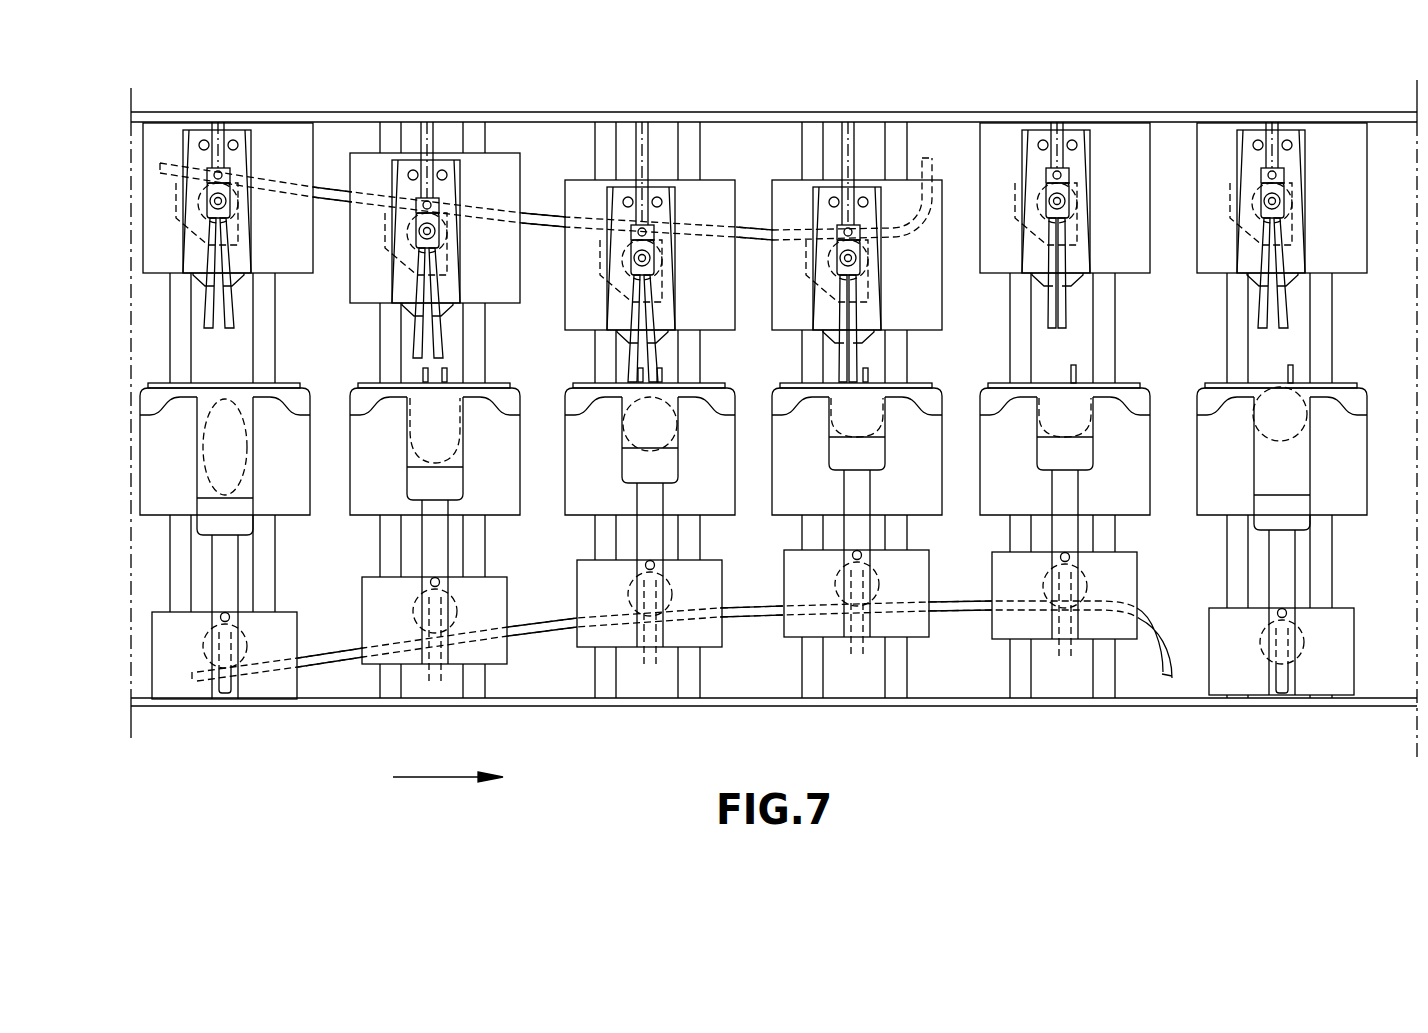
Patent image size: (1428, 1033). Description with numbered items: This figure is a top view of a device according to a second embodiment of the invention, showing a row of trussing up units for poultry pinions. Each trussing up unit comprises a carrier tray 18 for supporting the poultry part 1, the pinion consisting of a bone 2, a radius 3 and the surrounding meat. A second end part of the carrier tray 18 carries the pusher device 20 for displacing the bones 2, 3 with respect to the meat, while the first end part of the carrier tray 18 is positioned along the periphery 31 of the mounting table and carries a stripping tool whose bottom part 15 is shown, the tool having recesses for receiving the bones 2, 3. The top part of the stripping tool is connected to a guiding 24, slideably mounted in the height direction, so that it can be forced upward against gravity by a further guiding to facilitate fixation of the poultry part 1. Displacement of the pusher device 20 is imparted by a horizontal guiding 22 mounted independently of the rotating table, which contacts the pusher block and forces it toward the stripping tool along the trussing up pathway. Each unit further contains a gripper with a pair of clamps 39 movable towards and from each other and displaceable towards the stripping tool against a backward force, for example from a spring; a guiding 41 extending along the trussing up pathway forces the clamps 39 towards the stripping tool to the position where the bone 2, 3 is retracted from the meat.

The poultry part 1 is at (1279, 413).
The bone 2 is at (447, 378).
The radius 3 is at (1076, 375).
The bottom part of the stripping tool 15 is at (1350, 404).
The carrier tray 18 is at (1342, 477).
The pusher device 20 is at (1279, 592).
The horizontal guiding 22 is at (1168, 680).
The guiding 24 is at (1238, 568).
The periphery 31 is at (231, 704).
The clamps 39 is at (440, 350).
The guiding 41 is at (746, 232).